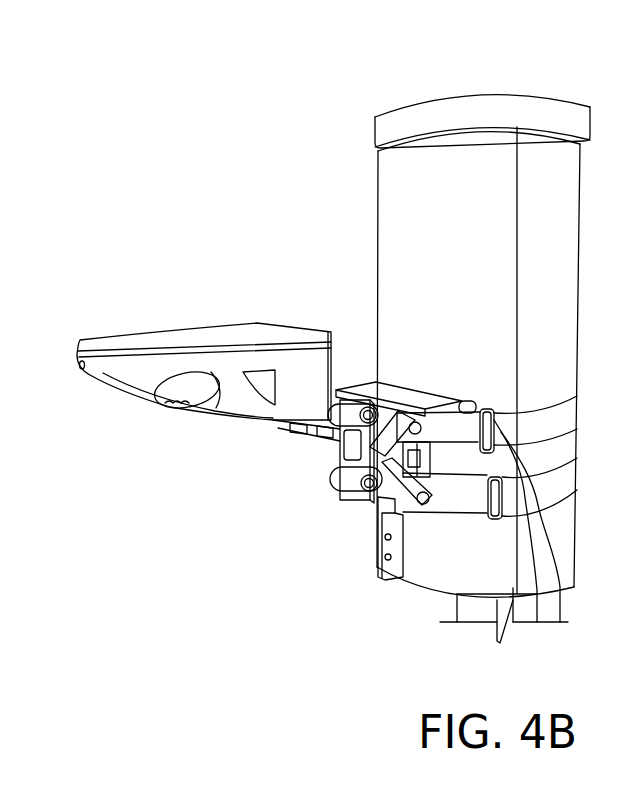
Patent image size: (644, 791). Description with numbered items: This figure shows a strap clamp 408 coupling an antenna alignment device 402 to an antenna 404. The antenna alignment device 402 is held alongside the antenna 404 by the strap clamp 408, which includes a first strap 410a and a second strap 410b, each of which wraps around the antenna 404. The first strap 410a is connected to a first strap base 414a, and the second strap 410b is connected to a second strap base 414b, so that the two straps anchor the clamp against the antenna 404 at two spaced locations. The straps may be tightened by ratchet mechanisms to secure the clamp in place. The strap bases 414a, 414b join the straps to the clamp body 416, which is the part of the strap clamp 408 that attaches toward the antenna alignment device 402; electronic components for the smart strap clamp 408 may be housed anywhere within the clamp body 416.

The antenna alignment device 402 is at (135, 338).
The antenna 404 is at (475, 93).
The strap clamp 408 is at (355, 510).
The first strap 410a is at (543, 420).
The second strap 410b is at (562, 483).
The first strap base 414a is at (426, 407).
The second strap base 414b is at (438, 492).
The clamp body 416 is at (350, 447).